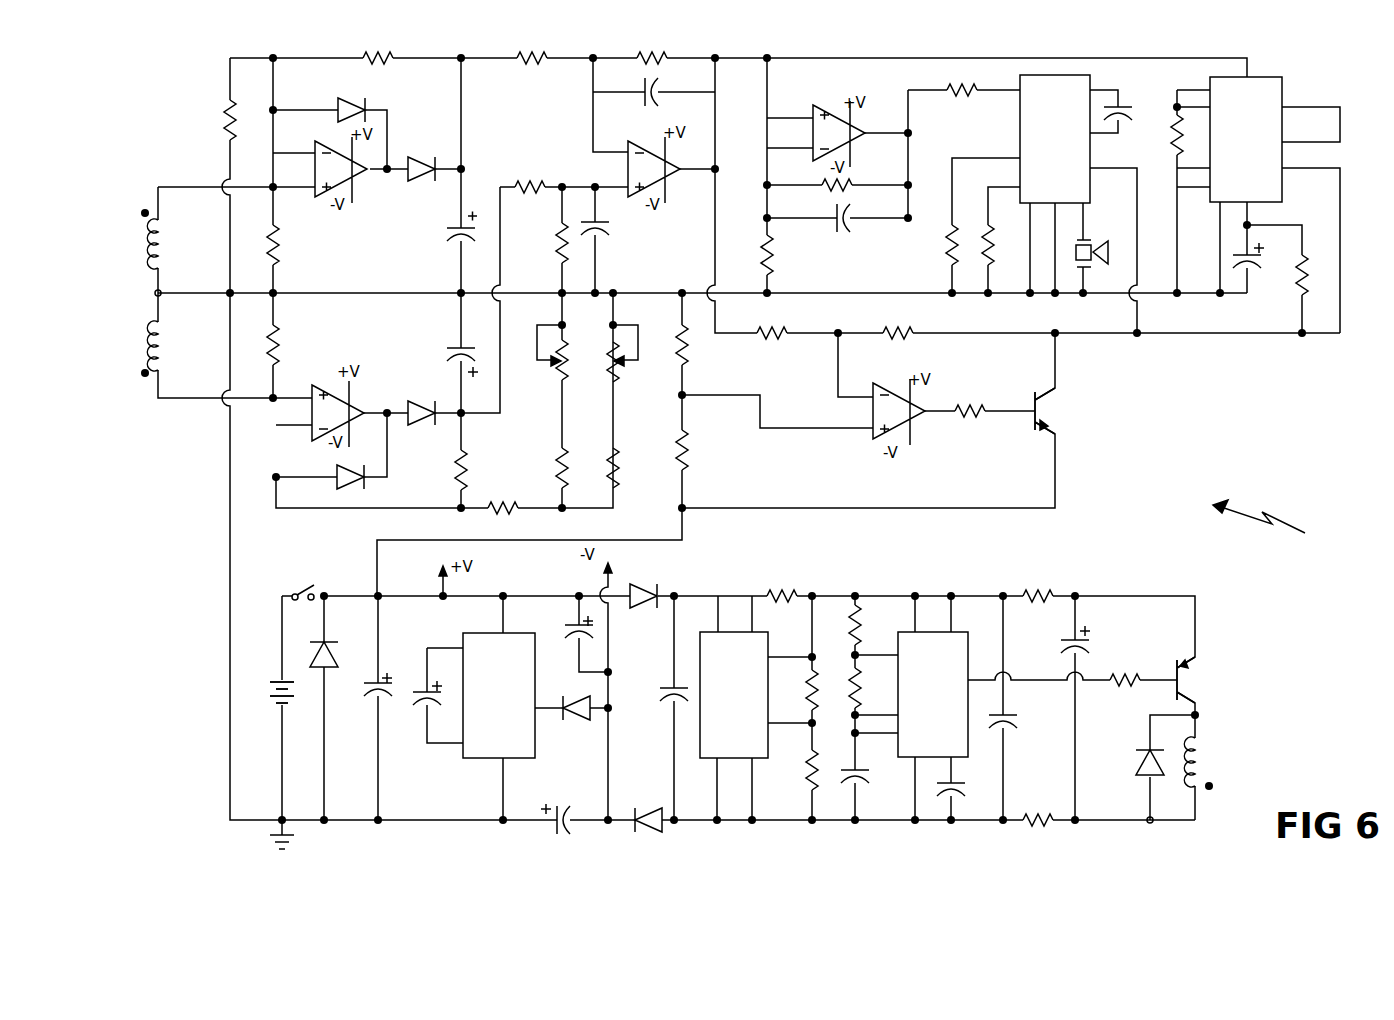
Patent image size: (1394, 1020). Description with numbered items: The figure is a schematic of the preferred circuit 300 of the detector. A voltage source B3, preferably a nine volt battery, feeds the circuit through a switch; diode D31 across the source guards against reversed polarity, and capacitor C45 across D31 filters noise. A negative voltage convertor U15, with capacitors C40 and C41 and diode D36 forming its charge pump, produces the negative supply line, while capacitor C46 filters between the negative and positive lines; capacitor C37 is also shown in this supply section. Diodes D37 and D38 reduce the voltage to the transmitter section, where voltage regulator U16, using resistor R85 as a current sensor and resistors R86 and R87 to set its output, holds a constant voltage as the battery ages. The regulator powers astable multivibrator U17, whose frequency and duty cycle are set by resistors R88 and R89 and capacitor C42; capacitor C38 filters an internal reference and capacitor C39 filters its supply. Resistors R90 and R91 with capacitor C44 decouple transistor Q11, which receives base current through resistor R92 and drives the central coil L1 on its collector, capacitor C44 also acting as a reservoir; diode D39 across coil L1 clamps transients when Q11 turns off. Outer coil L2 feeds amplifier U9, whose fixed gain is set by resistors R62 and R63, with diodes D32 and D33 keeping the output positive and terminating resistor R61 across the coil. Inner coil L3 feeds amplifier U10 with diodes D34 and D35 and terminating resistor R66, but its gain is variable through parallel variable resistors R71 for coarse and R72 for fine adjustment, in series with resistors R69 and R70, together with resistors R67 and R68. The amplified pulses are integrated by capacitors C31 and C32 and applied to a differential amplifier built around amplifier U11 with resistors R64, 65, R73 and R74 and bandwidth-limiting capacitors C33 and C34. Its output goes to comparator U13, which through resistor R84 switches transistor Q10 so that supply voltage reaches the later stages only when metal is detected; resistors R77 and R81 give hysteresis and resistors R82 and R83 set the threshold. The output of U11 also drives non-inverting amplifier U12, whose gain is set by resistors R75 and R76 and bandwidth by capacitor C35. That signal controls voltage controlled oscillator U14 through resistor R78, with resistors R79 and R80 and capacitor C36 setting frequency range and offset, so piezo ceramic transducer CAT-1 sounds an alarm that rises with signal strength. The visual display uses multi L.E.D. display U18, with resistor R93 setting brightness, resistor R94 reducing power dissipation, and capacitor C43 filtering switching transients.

The preferred circuit 300 is at (1218, 506).
The resistor 65 is at (530, 177).
The terminating resistor R61 is at (292, 245).
The resistor R62 is at (248, 112).
The resistor R63 is at (381, 48).
The resistor R64 is at (535, 48).
The terminating resistor R66 is at (292, 345).
The resistor R67 is at (506, 498).
The resistor R68 is at (480, 461).
The resistor R69 is at (545, 460).
The resistor R70 is at (630, 460).
The variable resistor R71 is at (544, 366).
The variable resistor R72 is at (632, 367).
The resistor R73 is at (542, 243).
The resistor R74 is at (654, 48).
The resistor R75 is at (787, 250).
The resistor R76 is at (816, 195).
The resistor R77 is at (774, 344).
The resistor R78 is at (967, 104).
The resistor R79 is at (1005, 253).
The resistor R80 is at (934, 253).
The resistor R81 is at (894, 344).
The resistor R82 is at (702, 450).
The resistor R83 is at (699, 345).
The resistor R84 is at (976, 401).
The resistor R85 is at (777, 611).
The resistor R86 is at (795, 690).
The resistor R87 is at (795, 777).
The resistor R88 is at (873, 625).
The resistor R89 is at (872, 688).
The resistor R90 is at (1032, 611).
The resistor R91 is at (1042, 804).
The resistor R92 is at (1122, 692).
The resistor R93 is at (1158, 138).
The resistor R94 is at (1319, 282).
The capacitor C31 is at (439, 232).
The capacitor C32 is at (445, 351).
The capacitor C33 is at (614, 234).
The capacitor C34 is at (671, 97).
The capacitor C35 is at (866, 225).
The capacitor C36 is at (1131, 101).
The capacitor C37 is at (652, 699).
The capacitor C38 is at (971, 793).
The capacitor C39 is at (1016, 709).
The capacitor C40 is at (415, 706).
The capacitor C41 is at (569, 808).
The capacitor C42 is at (870, 787).
The capacitor C43 is at (1259, 262).
The capacitor C44 is at (1094, 632).
The capacitor C45 is at (361, 692).
The capacitor C46 is at (560, 625).
The diode D31 is at (337, 639).
The diode D32 is at (353, 99).
The diode D33 is at (423, 155).
The diode D34 is at (370, 485).
The diode D35 is at (421, 427).
The diode D36 is at (568, 724).
The diode D37 is at (645, 608).
The diode D38 is at (651, 807).
The diode D39 is at (1140, 777).
The amplifier U9 is at (356, 170).
The amplifier U10 is at (352, 414).
The amplifier U11 is at (674, 170).
The amplifier U12 is at (854, 134).
The comparator U13 is at (912, 412).
The voltage controlled oscillator U14 is at (1055, 139).
The negative voltage convertor U15 is at (499, 695).
The monolithic voltage regulator U16 is at (734, 695).
The astable multivibrator U17 is at (933, 694).
The multi L.E.D. display U18 is at (1246, 139).
The transistor Q10 is at (1066, 411).
The transistor Q11 is at (1209, 680).
The central coil L1 is at (1212, 762).
The outer coil L2 is at (166, 244).
The inner coil L3 is at (165, 346).
The voltage source B3 is at (289, 708).
The piezo ceramic audio transducer CAT-1 is at (1103, 242).